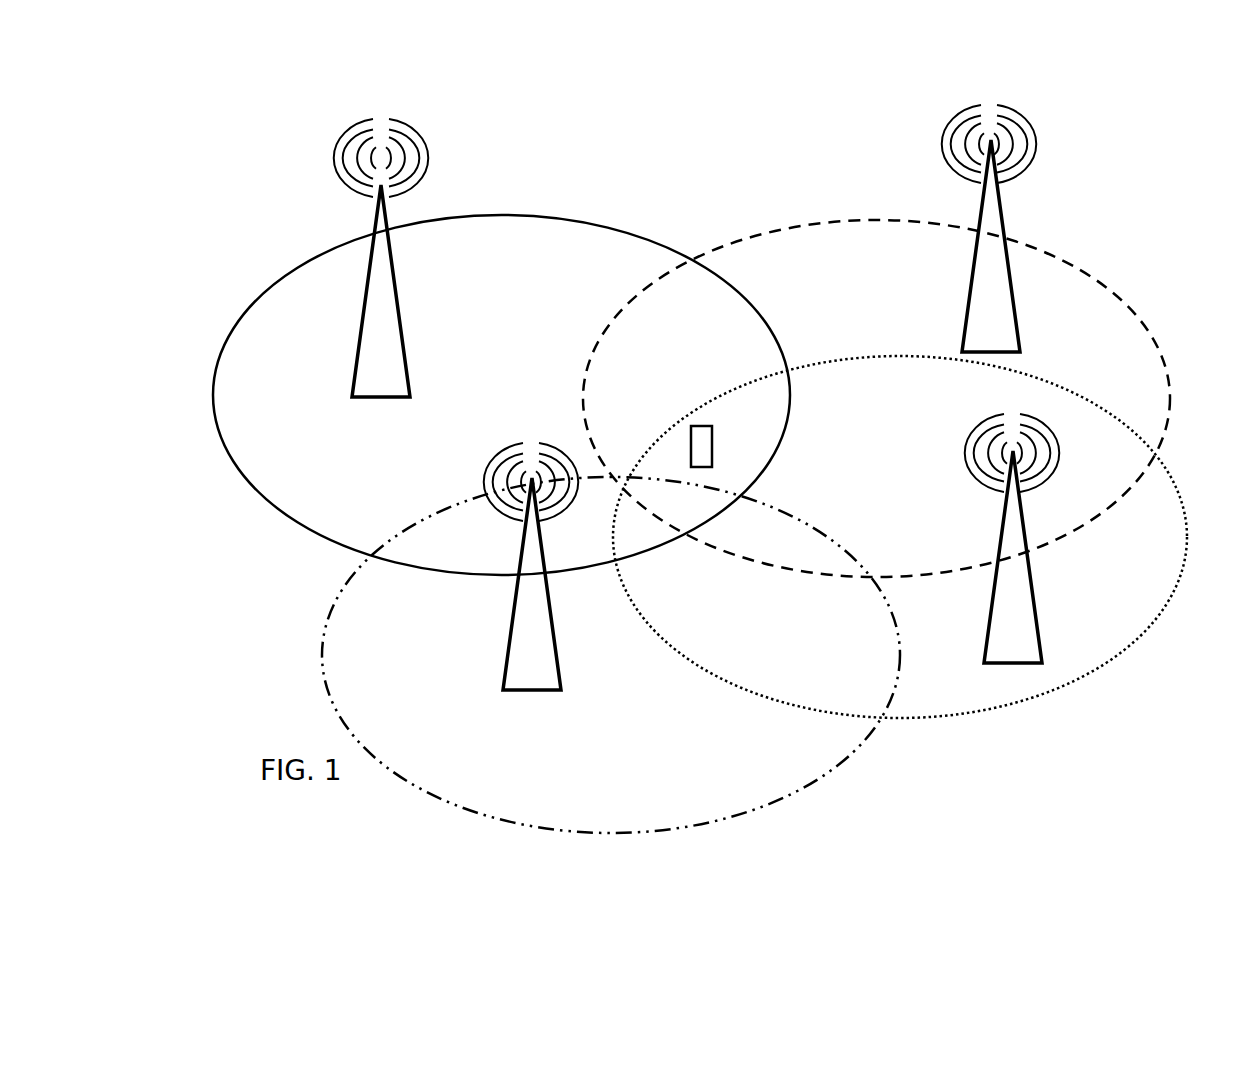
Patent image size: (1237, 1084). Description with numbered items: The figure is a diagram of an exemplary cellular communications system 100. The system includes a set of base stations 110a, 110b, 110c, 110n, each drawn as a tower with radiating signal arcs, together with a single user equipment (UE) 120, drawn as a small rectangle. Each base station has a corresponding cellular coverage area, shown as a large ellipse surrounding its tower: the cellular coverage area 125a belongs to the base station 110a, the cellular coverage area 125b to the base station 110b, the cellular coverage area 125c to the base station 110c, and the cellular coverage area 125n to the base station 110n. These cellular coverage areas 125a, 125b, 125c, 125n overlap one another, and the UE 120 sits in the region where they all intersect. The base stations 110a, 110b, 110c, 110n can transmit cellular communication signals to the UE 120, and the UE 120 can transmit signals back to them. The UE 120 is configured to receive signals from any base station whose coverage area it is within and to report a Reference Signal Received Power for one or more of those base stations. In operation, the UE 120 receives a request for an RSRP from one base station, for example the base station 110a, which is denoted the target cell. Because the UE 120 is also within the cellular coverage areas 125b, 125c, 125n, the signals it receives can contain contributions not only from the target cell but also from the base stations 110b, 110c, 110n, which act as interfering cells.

The cellular communications system 100 is at (631, 102).
The base station 110a is at (400, 220).
The base station 110b is at (998, 218).
The base station 110c is at (553, 675).
The base station 110n is at (1033, 597).
The user equipment 120 is at (715, 440).
The cellular coverage area 125a is at (313, 258).
The cellular coverage area 125b is at (813, 220).
The cellular coverage area 125c is at (330, 613).
The cellular coverage area 125n is at (1159, 612).